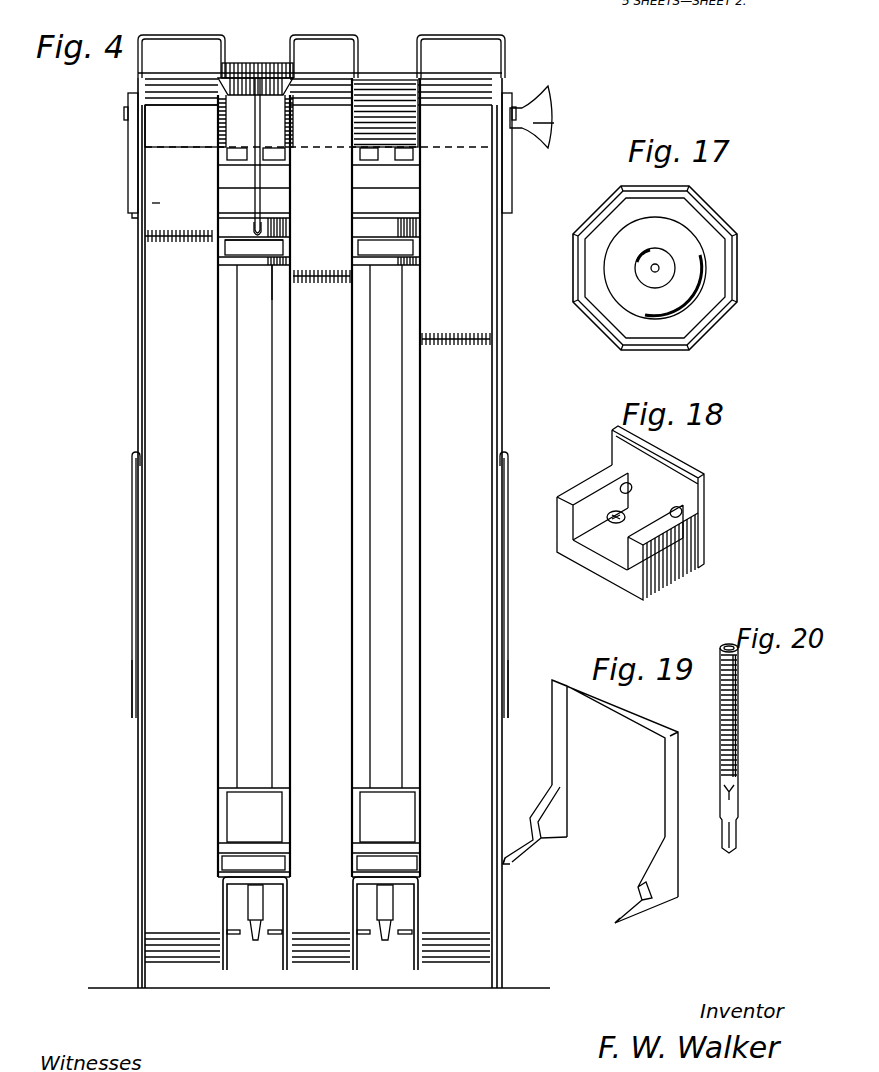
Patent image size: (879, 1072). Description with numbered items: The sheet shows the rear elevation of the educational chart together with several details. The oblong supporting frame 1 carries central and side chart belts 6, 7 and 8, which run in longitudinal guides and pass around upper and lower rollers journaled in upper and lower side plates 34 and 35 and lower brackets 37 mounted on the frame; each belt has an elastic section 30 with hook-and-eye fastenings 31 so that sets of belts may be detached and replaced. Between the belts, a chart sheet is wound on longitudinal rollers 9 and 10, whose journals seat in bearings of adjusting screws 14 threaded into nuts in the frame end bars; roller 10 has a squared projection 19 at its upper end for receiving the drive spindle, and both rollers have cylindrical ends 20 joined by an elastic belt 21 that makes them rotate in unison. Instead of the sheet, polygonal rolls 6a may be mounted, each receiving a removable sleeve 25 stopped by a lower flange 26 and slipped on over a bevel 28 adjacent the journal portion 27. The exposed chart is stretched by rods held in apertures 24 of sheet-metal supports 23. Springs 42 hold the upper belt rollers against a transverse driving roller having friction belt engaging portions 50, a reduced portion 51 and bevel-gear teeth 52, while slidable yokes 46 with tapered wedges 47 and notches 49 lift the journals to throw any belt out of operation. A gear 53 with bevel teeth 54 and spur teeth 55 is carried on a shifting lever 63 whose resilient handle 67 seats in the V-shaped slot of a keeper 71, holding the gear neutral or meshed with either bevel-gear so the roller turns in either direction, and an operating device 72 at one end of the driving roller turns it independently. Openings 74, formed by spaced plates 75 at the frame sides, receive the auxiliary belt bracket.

In FIG. 4, the oblong supporting frame 1 is at (135, 415).
In FIG. 4, the chart belt 6 is at (317, 527).
In FIG. 17, the polygonal roll 6a is at (740, 281).
In FIG. 4, the chart belt 7 is at (439, 537).
In FIG. 4, the chart belt 8 is at (175, 512).
In FIG. 4, the longitudinal roller 9 is at (397, 770).
In FIG. 4, the longitudinal roller 10 is at (240, 768).
In FIG. 4, the adjusting screw 14 is at (250, 902).
In FIG. 20, the adjusting screw 14 is at (738, 742).
In FIG. 4, the squared projection 19 is at (385, 912).
In FIG. 4, the cylindrical end 20 is at (296, 270).
In FIG. 4, the elastic belt 21 is at (240, 242).
In FIG. 18, the support 23 is at (686, 560).
In FIG. 18, the aperture 24 is at (614, 524).
In FIG. 17, the sleeve 25 is at (733, 268).
In FIG. 17, the flange 26 is at (738, 250).
In FIG. 17, the journal portion 27 is at (700, 237).
In FIG. 17, the bevel 28 is at (711, 318).
In FIG. 4, the elastic section 30 is at (152, 204).
In FIG. 4, the fastening 31 is at (148, 236).
In FIG. 4, the upper side plate 34 is at (136, 84).
In FIG. 4, the lower side plate 35 is at (140, 970).
In FIG. 4, the lower bracket 37 is at (285, 945).
In FIG. 4, the spring 42 is at (130, 168).
In FIG. 4, the slidable yoke 46 is at (480, 40).
In FIG. 19, the slidable yoke 46 is at (646, 720).
In FIG. 19, the wedge 47 is at (540, 842).
In FIG. 19, the notch 49 is at (525, 862).
In FIG. 4, the chart belt engaging portion 50 is at (181, 126).
In FIG. 4, the reduced portion 51 is at (255, 112).
In FIG. 4, the bevel-gear teeth 52 is at (198, 178).
In FIG. 4, the gear 53 is at (257, 59).
In FIG. 4, the bevel teeth 54 is at (254, 62).
In FIG. 4, the spur teeth 55 is at (292, 76).
In FIG. 4, the shifting lever 63 is at (262, 182).
In FIG. 4, the handle 67 is at (262, 222).
In FIG. 4, the keeper 71 is at (270, 170).
In FIG. 4, the operating device 72 is at (552, 122).
In FIG. 4, the opening 74 is at (498, 498).
In FIG. 4, the plate 75 is at (508, 592).